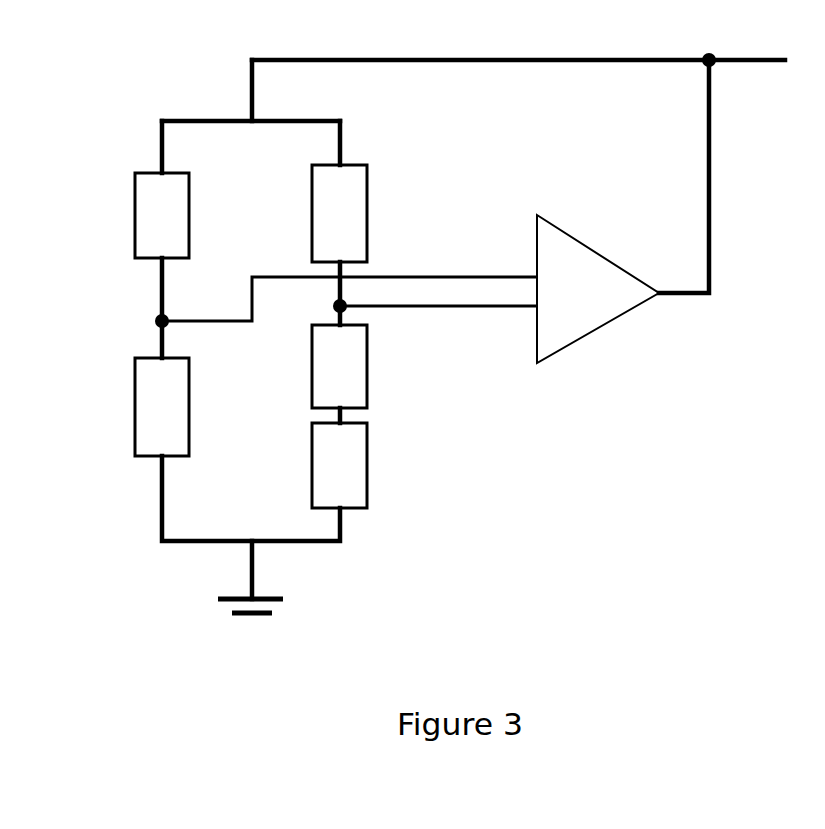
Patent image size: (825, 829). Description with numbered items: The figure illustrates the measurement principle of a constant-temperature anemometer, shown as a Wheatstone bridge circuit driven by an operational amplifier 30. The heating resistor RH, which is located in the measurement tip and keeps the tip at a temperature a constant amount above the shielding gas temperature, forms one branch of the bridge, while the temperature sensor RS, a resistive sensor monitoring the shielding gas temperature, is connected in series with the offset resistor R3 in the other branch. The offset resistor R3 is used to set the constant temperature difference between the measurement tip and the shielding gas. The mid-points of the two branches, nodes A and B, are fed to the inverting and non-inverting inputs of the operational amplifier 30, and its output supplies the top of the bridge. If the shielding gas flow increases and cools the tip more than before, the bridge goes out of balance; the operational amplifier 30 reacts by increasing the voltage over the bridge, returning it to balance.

The operational amplifier 30 is at (598, 292).
The node A is at (146, 323).
The node B is at (330, 305).
The heating resistor RH is at (162, 407).
The offset resistor R3 is at (339, 366).
The temperature sensor RS is at (339, 465).